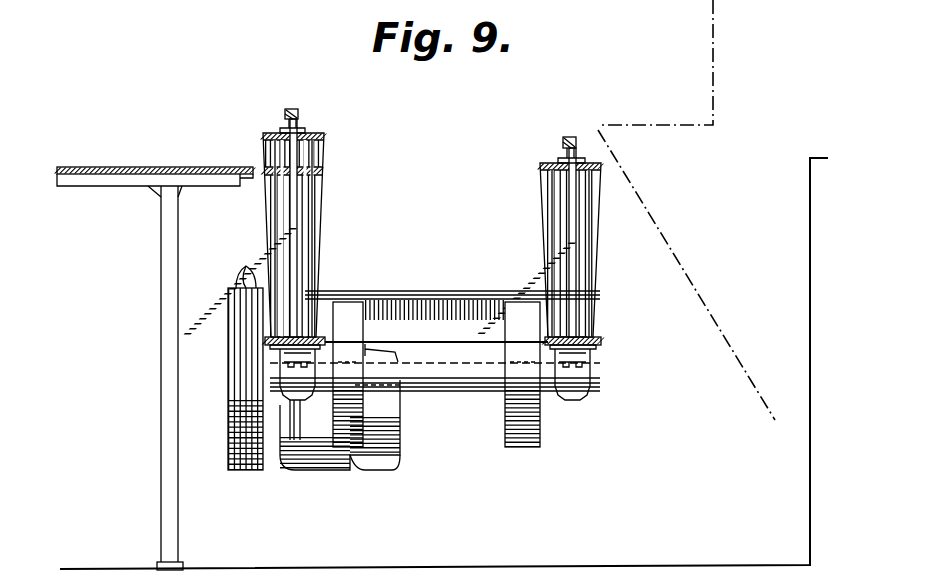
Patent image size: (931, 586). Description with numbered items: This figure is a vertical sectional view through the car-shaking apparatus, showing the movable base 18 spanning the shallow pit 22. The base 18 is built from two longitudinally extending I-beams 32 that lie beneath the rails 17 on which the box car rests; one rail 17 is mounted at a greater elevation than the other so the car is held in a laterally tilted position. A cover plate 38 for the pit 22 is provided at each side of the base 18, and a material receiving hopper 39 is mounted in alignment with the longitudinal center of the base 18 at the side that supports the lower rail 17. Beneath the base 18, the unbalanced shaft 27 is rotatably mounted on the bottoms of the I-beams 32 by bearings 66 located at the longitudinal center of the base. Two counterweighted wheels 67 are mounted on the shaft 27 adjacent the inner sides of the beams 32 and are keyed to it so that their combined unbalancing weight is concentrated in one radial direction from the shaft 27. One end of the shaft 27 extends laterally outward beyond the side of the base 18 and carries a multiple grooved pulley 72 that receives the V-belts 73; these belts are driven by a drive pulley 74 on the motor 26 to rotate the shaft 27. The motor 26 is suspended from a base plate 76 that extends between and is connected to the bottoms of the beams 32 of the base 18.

The rails 17 is at (292, 109).
The movable base 18 is at (607, 260).
The pit 22 is at (470, 565).
The motor 26 is at (373, 470).
The unbalanced shaft 27 is at (466, 396).
The I-beams 32 is at (297, 240).
The cover plate 38 is at (163, 170).
The material receiving hopper 39 is at (712, 58).
The bearings 66 is at (296, 412).
The counterweighted wheels 67 is at (352, 298).
The multiple grooved pulley 72 is at (228, 374).
The V-belts 73 is at (244, 268).
The drive pulley 74 is at (228, 436).
The base plate 76 is at (427, 342).